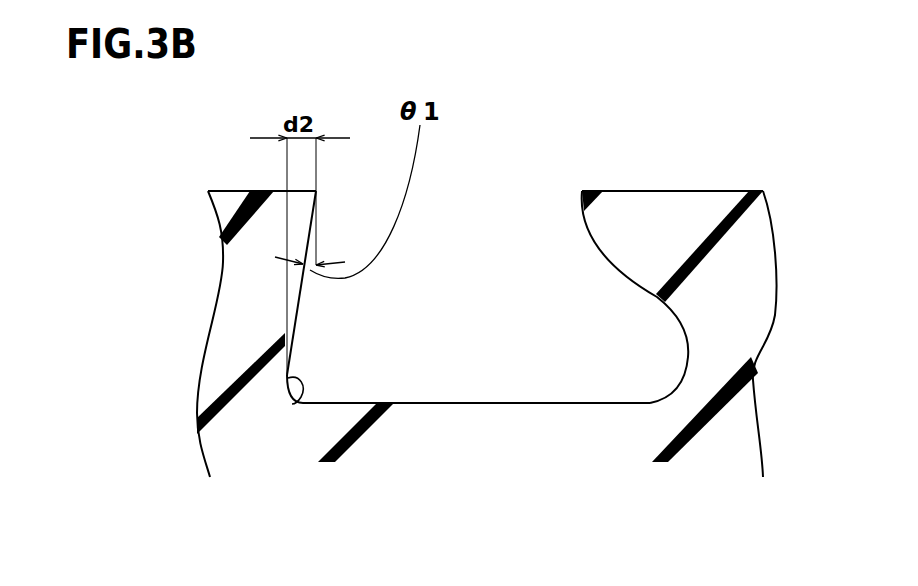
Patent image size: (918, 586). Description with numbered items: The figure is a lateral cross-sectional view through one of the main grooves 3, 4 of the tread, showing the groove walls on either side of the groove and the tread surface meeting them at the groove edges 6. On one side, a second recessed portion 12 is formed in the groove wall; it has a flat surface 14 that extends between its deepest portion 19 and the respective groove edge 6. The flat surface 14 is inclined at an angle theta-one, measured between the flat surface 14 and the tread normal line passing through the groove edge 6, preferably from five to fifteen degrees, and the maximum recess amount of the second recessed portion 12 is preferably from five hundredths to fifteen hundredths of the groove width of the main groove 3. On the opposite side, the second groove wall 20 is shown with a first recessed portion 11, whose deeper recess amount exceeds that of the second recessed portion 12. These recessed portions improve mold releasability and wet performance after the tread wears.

The main groove 3 is at (467, 314).
The groove 4 is at (467, 314).
The groove edge 6 is at (316, 191).
The first recessed portion 11 is at (672, 353).
The second recessed portion 12 is at (298, 358).
The flat surface 14 is at (298, 297).
The deepest portion 19 is at (300, 403).
The second groove wall 20 is at (633, 372).